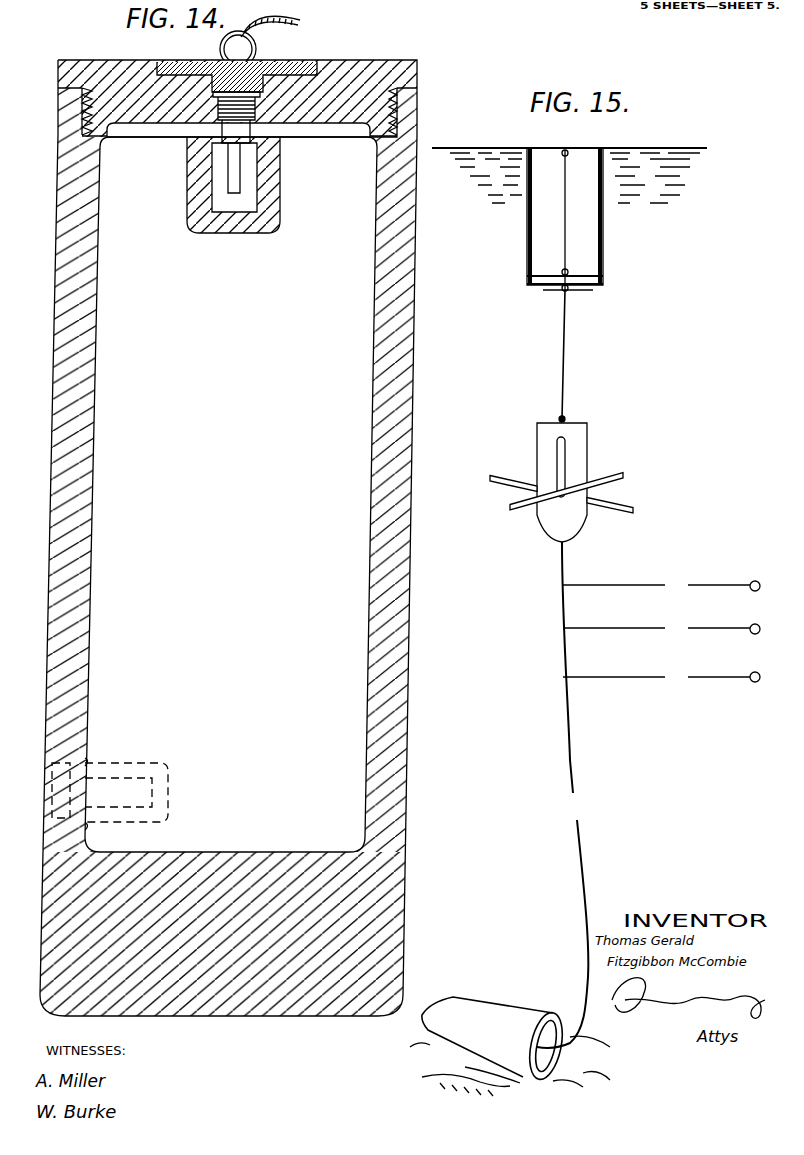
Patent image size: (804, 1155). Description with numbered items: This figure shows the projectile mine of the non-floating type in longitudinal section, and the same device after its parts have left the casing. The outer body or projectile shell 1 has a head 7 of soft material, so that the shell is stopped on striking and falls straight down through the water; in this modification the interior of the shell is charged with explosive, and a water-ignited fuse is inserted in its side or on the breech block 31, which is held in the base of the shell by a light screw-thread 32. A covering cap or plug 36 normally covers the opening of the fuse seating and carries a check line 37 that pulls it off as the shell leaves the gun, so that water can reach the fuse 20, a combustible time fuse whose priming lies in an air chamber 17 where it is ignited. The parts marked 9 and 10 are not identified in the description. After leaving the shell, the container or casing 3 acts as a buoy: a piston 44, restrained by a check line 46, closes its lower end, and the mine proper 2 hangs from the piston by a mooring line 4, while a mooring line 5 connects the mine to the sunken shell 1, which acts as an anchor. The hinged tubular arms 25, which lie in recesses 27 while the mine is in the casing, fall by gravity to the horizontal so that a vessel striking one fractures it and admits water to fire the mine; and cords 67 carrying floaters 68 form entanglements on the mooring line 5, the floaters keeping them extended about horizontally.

In FIG. 14, the projectile shell 1 is at (73, 231).
In FIG. 15, the projectile shell 1 is at (493, 1012).
In FIG. 14, the mine proper 2 is at (352, 207).
In FIG. 15, the mine proper 2 is at (537, 433).
In FIG. 14, the head 7 is at (370, 903).
In FIG. 14, the valve 9 is at (113, 792).
In FIG. 14, the screw 10 is at (240, 131).
In FIG. 14, the air chamber 17 is at (253, 139).
In FIG. 14, the fuse 20 is at (234, 177).
In FIG. 14, the breech block 31 is at (99, 63).
In FIG. 14, the screw-thread 32 is at (398, 114).
In FIG. 14, the covering cap or plug 36 is at (210, 62).
In FIG. 14, the check line 37 is at (284, 29).
In FIG. 15, the casing 3 is at (527, 237).
In FIG. 15, the mooring line 4 is at (565, 356).
In FIG. 15, the mooring line 5 is at (576, 826).
In FIG. 15, the hinged tubular arms 25 is at (509, 500).
In FIG. 15, the recesses 27 is at (561, 458).
In FIG. 15, the piston 44 is at (546, 279).
In FIG. 15, the check line 46 is at (566, 218).
In FIG. 15, the cords 67 is at (618, 597).
In FIG. 15, the floaters 68 is at (749, 626).